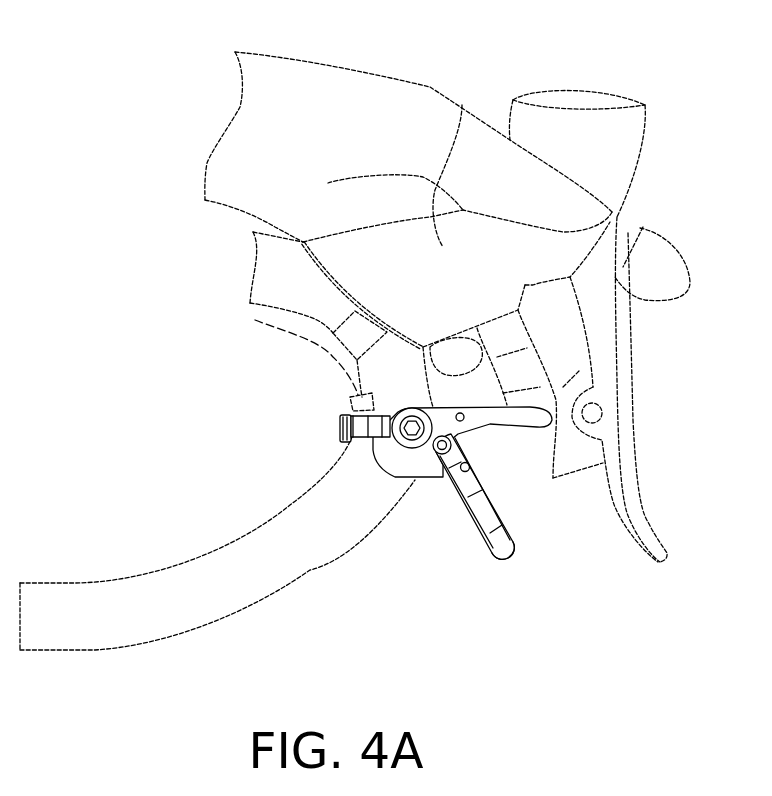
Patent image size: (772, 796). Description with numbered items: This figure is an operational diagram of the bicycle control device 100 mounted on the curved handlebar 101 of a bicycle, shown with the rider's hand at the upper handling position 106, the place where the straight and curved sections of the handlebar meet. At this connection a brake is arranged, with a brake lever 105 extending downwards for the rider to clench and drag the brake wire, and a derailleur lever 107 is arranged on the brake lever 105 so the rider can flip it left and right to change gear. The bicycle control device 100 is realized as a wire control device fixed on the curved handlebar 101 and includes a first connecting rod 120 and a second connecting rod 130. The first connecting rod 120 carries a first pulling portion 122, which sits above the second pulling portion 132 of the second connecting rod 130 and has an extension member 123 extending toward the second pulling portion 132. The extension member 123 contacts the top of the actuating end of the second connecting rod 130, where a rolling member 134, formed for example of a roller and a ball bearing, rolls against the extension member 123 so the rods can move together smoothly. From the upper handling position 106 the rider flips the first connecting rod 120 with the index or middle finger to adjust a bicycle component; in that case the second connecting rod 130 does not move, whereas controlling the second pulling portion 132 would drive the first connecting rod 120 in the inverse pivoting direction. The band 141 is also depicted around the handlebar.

The bicycle control device 100 is at (323, 429).
The curved handlebar 101 is at (233, 583).
The brake lever 105 is at (627, 393).
The upper handling position 106 is at (462, 105).
The derailleur lever 107 is at (580, 451).
The first connecting rod 120 is at (480, 397).
The first pulling portion 122 is at (540, 470).
The extension member 123 is at (465, 440).
The second connecting rod 130 is at (518, 567).
The second pulling portion 132 is at (488, 550).
The rolling member 134 is at (428, 450).
The clamp band 141 is at (302, 335).